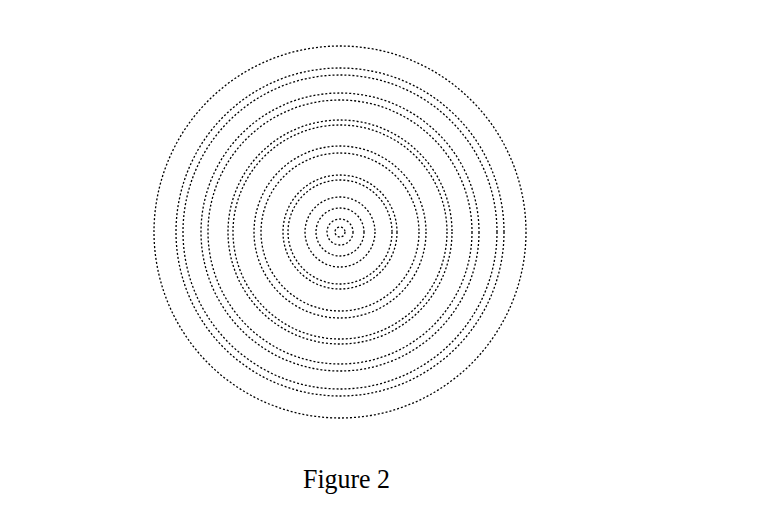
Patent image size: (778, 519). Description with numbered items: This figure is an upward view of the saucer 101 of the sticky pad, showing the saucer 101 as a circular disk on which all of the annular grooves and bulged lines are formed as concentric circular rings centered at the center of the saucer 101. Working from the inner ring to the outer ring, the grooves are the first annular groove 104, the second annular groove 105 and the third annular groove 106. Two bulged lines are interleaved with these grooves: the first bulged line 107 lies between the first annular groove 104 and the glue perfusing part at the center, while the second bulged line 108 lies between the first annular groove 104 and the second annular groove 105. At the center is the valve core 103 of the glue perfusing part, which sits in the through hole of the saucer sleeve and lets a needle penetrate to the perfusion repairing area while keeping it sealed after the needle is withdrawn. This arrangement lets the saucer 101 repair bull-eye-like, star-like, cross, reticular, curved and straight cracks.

The saucer 101 is at (388, 56).
The valve core 103 is at (345, 237).
The first annular groove 104 is at (268, 275).
The second annular groove 105 is at (408, 349).
The third annular groove 106 is at (485, 165).
The first bulged line 107 is at (332, 181).
The second bulged line 108 is at (295, 331).